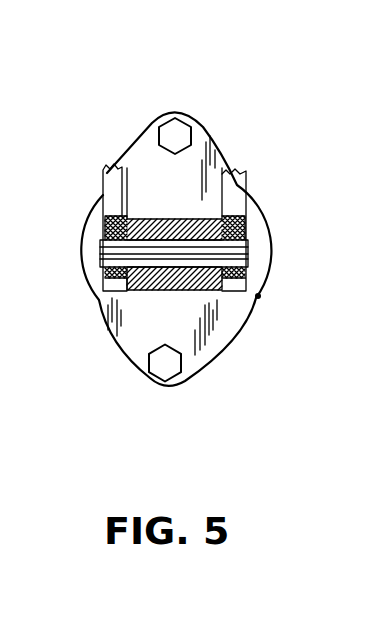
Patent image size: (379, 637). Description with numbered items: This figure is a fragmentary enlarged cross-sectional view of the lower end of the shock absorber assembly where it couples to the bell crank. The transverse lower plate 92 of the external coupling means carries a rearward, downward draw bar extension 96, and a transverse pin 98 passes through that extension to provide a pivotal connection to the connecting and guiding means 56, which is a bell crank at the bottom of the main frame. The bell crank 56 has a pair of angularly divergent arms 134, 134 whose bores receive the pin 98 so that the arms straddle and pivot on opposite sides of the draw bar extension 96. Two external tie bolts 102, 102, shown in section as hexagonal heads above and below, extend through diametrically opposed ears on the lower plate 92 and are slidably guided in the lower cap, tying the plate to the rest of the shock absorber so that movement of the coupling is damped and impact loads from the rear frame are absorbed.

The connecting and guiding means 56 is at (258, 296).
The lower plate 92 is at (185, 205).
The draw bar extension 96 is at (189, 290).
The transverse pin 98 is at (244, 252).
The tie bolts 102 is at (177, 133).
The arms 134 is at (115, 195).